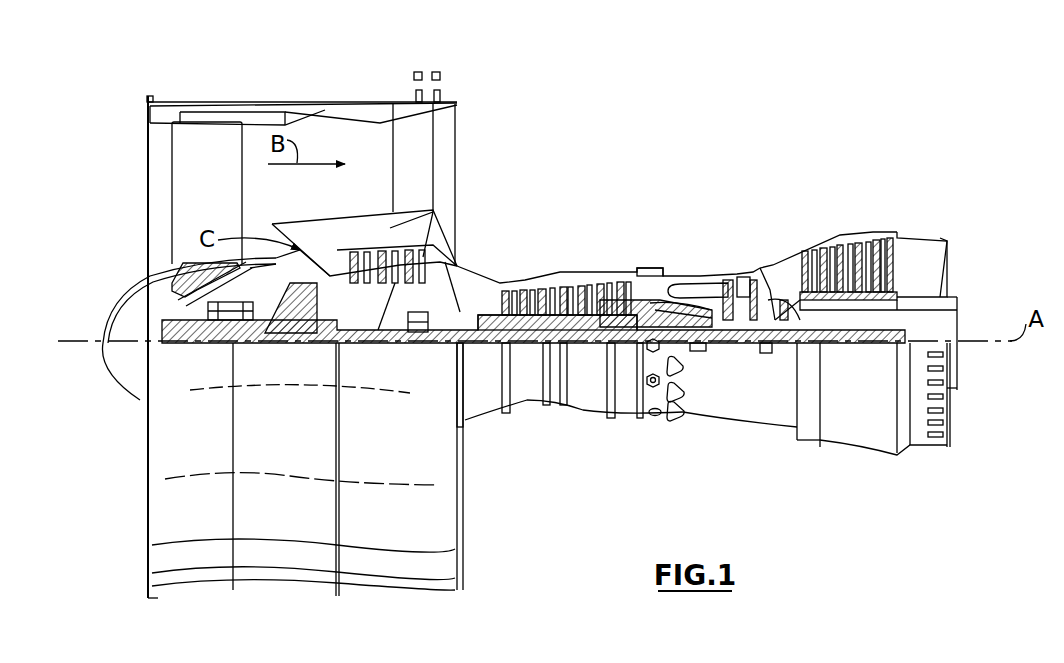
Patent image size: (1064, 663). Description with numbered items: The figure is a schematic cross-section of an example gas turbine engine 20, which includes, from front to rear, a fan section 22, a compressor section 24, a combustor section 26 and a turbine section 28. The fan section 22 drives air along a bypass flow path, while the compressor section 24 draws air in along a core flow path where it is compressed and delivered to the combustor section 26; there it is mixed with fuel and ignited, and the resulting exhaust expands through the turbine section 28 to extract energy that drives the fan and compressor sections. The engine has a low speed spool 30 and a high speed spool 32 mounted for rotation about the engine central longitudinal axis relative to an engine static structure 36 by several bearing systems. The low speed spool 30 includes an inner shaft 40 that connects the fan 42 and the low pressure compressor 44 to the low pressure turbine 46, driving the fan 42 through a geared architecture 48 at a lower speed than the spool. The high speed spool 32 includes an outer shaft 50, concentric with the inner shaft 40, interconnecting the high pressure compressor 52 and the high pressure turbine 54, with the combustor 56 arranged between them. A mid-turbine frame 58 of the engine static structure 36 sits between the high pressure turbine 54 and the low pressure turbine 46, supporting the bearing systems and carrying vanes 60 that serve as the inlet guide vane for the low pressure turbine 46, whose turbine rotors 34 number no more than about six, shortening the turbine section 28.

The gas turbine engine 20 is at (694, 142).
The fan section 22 is at (138, 78).
The compressor section 24 is at (680, 200).
The combustor section 26 is at (682, 244).
The turbine section 28 is at (864, 276).
The low speed spool 30 is at (589, 350).
The high speed spool 32 is at (628, 278).
The turbine rotors 34 is at (856, 335).
The engine static structure 36 is at (624, 420).
The inner shaft 40 is at (474, 356).
The fan 42 is at (192, 209).
The low pressure compressor section 44 is at (400, 257).
The low pressure turbine section 46 is at (848, 248).
The geared architecture 48 is at (308, 328).
The outer shaft 50 is at (690, 343).
The high pressure compressor section 52 is at (568, 312).
The high pressure turbine section 54 is at (748, 276).
The combustor 56 is at (699, 290).
The mid-turbine frame 58 is at (781, 262).
The vanes 60 is at (806, 343).